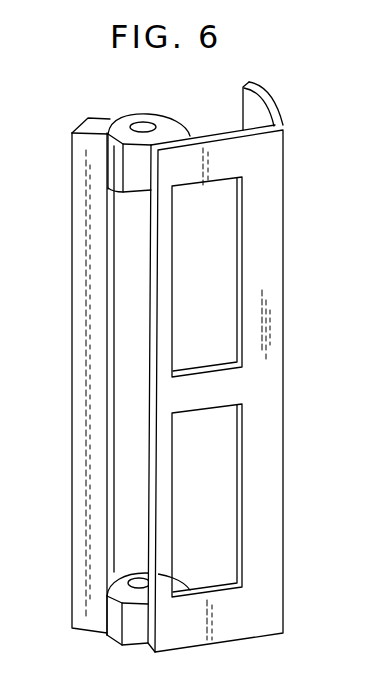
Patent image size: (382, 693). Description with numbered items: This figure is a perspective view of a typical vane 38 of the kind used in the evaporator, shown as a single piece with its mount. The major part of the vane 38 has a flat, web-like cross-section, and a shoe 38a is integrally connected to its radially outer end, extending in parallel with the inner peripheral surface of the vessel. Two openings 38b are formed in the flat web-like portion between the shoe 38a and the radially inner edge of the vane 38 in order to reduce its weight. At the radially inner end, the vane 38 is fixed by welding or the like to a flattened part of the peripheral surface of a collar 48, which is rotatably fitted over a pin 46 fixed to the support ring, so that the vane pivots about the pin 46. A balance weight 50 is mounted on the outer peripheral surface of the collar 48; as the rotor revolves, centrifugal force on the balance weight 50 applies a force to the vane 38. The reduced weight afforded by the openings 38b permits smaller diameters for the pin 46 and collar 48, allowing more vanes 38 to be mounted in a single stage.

The vane 38 is at (218, 138).
The shoe 38a is at (266, 95).
The openings 38b is at (227, 270).
The pin 46 is at (143, 127).
The collar 48 is at (107, 158).
The balance weight 50 is at (87, 447).